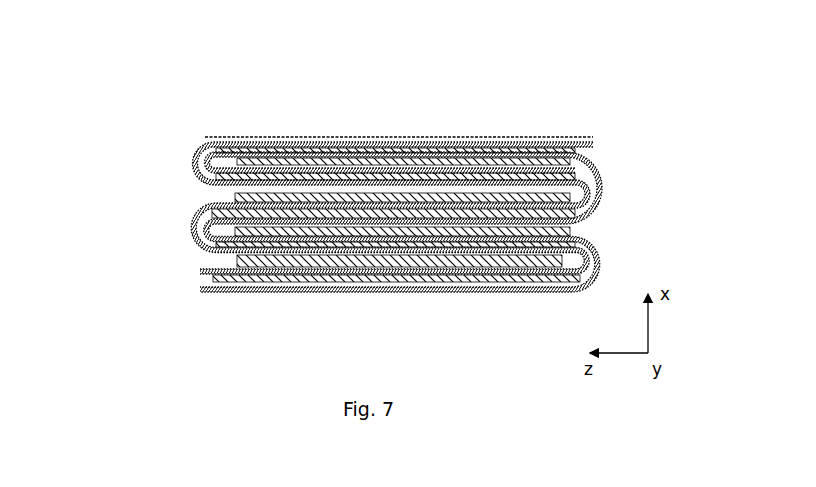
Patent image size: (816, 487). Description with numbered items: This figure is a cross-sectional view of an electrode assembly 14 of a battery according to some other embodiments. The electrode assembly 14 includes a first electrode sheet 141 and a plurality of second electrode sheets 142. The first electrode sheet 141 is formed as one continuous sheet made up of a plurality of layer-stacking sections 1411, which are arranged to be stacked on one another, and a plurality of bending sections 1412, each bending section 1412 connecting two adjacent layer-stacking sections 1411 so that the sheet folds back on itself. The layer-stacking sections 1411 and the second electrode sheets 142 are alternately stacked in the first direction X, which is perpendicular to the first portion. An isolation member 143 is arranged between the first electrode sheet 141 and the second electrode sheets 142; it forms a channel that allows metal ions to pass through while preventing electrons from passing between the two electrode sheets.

The electrode assembly 14 is at (243, 55).
The first electrode sheet 141 is at (110, 98).
The layer-stacking section 1411 is at (250, 138).
The bending section 1412 is at (207, 171).
The second electrode sheet 142 is at (538, 262).
The isolation member 143 is at (412, 152).